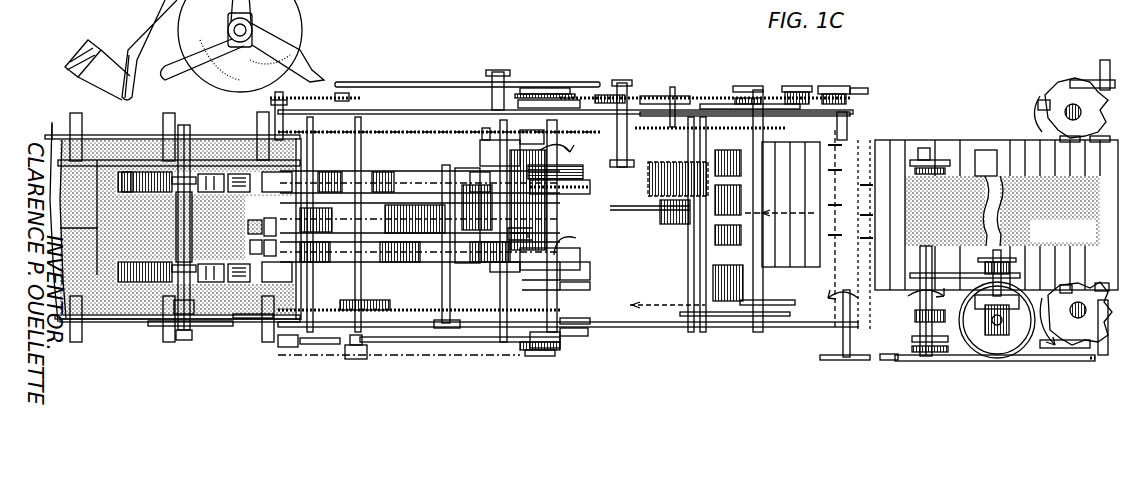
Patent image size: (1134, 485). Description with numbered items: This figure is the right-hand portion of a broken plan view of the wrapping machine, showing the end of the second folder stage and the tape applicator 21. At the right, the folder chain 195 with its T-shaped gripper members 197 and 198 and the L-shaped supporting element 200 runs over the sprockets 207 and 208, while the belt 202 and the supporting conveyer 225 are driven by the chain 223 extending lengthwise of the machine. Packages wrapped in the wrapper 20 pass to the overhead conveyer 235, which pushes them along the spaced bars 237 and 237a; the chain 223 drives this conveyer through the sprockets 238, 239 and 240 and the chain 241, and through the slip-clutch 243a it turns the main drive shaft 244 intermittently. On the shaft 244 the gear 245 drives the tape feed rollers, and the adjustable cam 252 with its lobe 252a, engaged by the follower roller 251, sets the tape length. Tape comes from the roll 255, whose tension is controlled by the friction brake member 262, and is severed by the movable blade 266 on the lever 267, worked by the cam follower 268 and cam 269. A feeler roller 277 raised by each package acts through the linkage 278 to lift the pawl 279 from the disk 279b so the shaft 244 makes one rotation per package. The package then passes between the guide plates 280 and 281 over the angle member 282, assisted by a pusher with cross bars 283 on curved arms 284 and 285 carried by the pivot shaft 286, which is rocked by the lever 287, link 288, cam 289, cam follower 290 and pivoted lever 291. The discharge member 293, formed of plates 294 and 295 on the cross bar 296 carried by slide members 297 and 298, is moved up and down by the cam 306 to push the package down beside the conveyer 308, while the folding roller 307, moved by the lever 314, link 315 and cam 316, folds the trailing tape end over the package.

The wrapper 20 is at (108, 250).
The tape applicator 21 is at (709, 70).
The chain 195 is at (1078, 90).
The gripper member 197 is at (1096, 300).
The gripper member 198 is at (1040, 106).
The L-shaped element 200 is at (1105, 70).
The belt 202 is at (952, 180).
The sprocket 207 is at (1045, 88).
The sprocket 208 is at (1062, 290).
The chain 223 is at (878, 356).
The supporting conveyer 225 is at (898, 145).
The overhead conveyer 235 is at (422, 130).
The bar 237 is at (690, 276).
The bar 237a is at (648, 178).
The sprocket 238 is at (855, 92).
The sprocket 239 is at (830, 86).
The sprocket 240 is at (740, 88).
The chain 241 is at (790, 86).
The slip-clutch 243a is at (608, 100).
The main drive shaft 244 is at (570, 355).
The gear 245 is at (569, 247).
The follower roller 251 is at (574, 131).
The adjustable cam 252 is at (560, 195).
The cam lobe 252a is at (576, 178).
The roll 255 is at (303, 14).
The friction brake member 262 is at (166, 30).
The movable blade 266 is at (461, 210).
The lever 267 is at (500, 282).
The cam follower 268 is at (568, 280).
The cam 269 is at (570, 287).
The feeler roller 277 is at (745, 228).
The linkage 278 is at (671, 228).
The pawl 279 is at (612, 92).
The disk 279b is at (600, 96).
The guide plate 280 is at (122, 320).
The guide plate 281 is at (115, 187).
The angle member 282 is at (262, 245).
The cross bar 283 is at (372, 202).
The curved arm 284 is at (327, 200).
The curved arm 285 is at (331, 242).
The pivot shaft 286 is at (268, 100).
The lever 287 is at (348, 100).
The link 288 is at (393, 83).
The cam 289 is at (590, 106).
The cam follower 290 is at (537, 80).
The pivoted lever 291 is at (500, 84).
The discharge member 293 is at (55, 120).
The plate 294 is at (127, 193).
The plate 295 is at (155, 262).
The cross bar 296 is at (182, 214).
The slide member 297 is at (187, 330).
The slide member 298 is at (184, 134).
The cam 306 is at (642, 315).
The folding roller 307 is at (249, 226).
The conveyer 308 is at (242, 320).
The lever 314 is at (360, 350).
The link 315 is at (418, 340).
The cam 316 is at (505, 345).